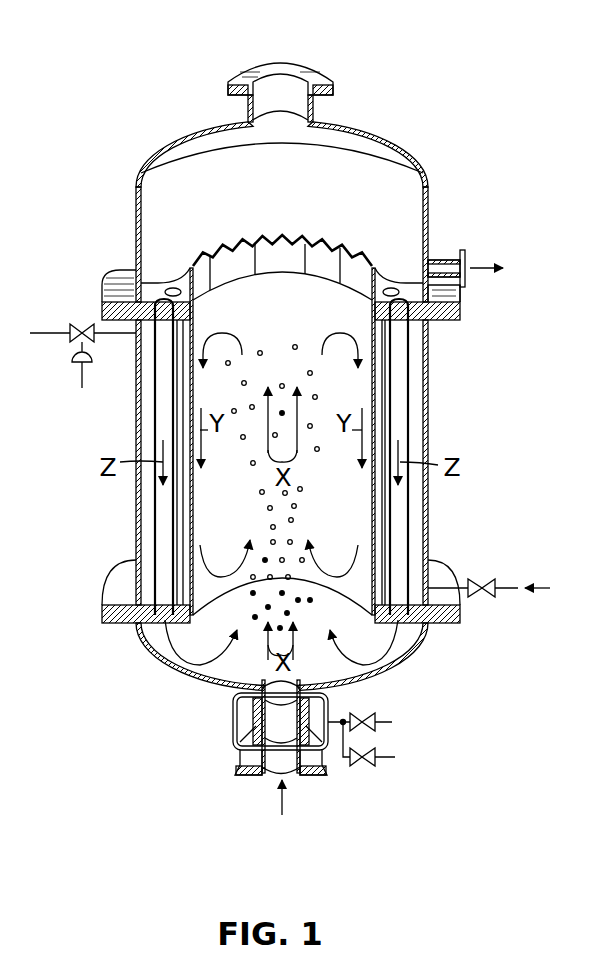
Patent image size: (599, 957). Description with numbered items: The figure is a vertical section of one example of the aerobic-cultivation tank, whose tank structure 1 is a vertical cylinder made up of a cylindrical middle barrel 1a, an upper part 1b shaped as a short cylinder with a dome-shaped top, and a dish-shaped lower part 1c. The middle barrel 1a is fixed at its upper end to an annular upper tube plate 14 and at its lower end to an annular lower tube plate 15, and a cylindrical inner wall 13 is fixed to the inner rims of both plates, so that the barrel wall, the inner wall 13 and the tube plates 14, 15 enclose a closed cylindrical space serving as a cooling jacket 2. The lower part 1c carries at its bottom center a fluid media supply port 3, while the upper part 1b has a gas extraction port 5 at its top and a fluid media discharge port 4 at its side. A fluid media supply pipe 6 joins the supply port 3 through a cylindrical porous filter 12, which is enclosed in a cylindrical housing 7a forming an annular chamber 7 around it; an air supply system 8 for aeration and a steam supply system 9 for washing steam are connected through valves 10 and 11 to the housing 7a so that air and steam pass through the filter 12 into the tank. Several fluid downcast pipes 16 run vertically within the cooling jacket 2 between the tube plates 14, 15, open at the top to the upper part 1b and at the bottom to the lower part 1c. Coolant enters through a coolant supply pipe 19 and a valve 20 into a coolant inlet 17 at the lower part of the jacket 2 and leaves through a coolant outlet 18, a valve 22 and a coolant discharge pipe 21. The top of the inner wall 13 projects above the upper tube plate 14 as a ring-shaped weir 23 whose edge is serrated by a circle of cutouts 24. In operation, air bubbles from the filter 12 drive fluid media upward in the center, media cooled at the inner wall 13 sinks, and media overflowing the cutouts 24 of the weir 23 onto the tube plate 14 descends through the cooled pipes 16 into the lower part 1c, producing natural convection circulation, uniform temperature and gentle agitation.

The tank structure 1 is at (460, 393).
The cylindrical middle barrel 1a is at (428, 510).
The upper part 1b is at (421, 165).
The lower part 1c is at (413, 650).
The cooling jacket 2 is at (418, 355).
The fluid media supply port 3 is at (291, 688).
The fluid media discharge port 4 is at (445, 266).
The gas extraction port 5 is at (285, 80).
The fluid media supply pipe 6 is at (272, 765).
The annular chamber 7 is at (243, 715).
The cylindrical housing 7a is at (234, 731).
The air supply system 8 is at (392, 722).
The steam supply system 9 is at (395, 757).
The valve 10 is at (355, 714).
The valve 11 is at (360, 768).
The cylindrical porous filter 12 is at (255, 735).
The cylindrical inner wall 13 is at (195, 503).
The upper tube plate 14 is at (149, 296).
The lower tube plate 15 is at (182, 612).
The fluid downcast pipe 16 is at (154, 412).
The coolant inlet 17 is at (438, 577).
The coolant outlet 18 is at (135, 335).
The coolant supply pipe 19 is at (508, 585).
The valve 20 is at (486, 600).
The coolant discharge pipe 21 is at (40, 333).
The valve 22 is at (80, 324).
The ring-shaped weir 23 is at (281, 262).
The cutouts 24 is at (236, 250).